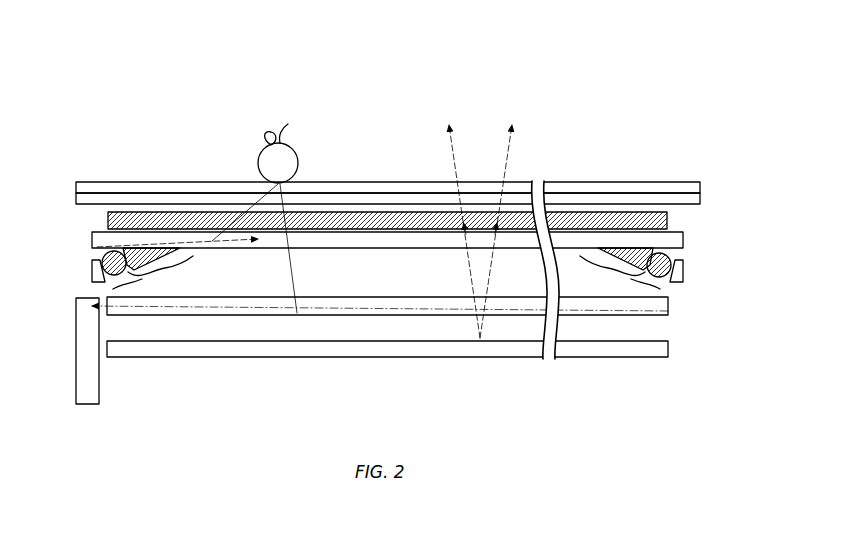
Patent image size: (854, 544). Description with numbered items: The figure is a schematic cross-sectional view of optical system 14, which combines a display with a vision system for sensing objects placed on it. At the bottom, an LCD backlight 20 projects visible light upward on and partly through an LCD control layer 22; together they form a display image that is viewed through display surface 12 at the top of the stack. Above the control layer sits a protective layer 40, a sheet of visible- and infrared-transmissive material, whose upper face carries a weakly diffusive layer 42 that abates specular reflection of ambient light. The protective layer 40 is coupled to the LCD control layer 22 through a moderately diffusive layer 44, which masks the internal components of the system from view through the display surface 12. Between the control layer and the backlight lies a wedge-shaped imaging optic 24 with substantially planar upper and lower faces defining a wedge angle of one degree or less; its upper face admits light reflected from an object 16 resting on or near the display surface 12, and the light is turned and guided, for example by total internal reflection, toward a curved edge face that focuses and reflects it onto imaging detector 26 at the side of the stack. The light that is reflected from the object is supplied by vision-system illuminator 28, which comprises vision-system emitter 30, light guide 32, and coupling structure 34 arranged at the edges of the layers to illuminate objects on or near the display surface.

The display surface 12 is at (420, 174).
The optical system 14 is at (190, 58).
The object 16 is at (289, 173).
The LCD backlight 20 is at (388, 357).
The LCD control layer 22 is at (107, 222).
The imaging optic 24 is at (387, 297).
The imaging detector 26 is at (99, 365).
The vision-system illuminator 28 is at (48, 232).
The vision-system emitter 30 is at (90, 266).
The light guide 32 is at (684, 243).
The coupling structure 34 is at (386, 273).
The protective layer 40 is at (705, 182).
The weakly diffusive layer 42 is at (700, 182).
The moderately diffusive layer 44 is at (668, 208).